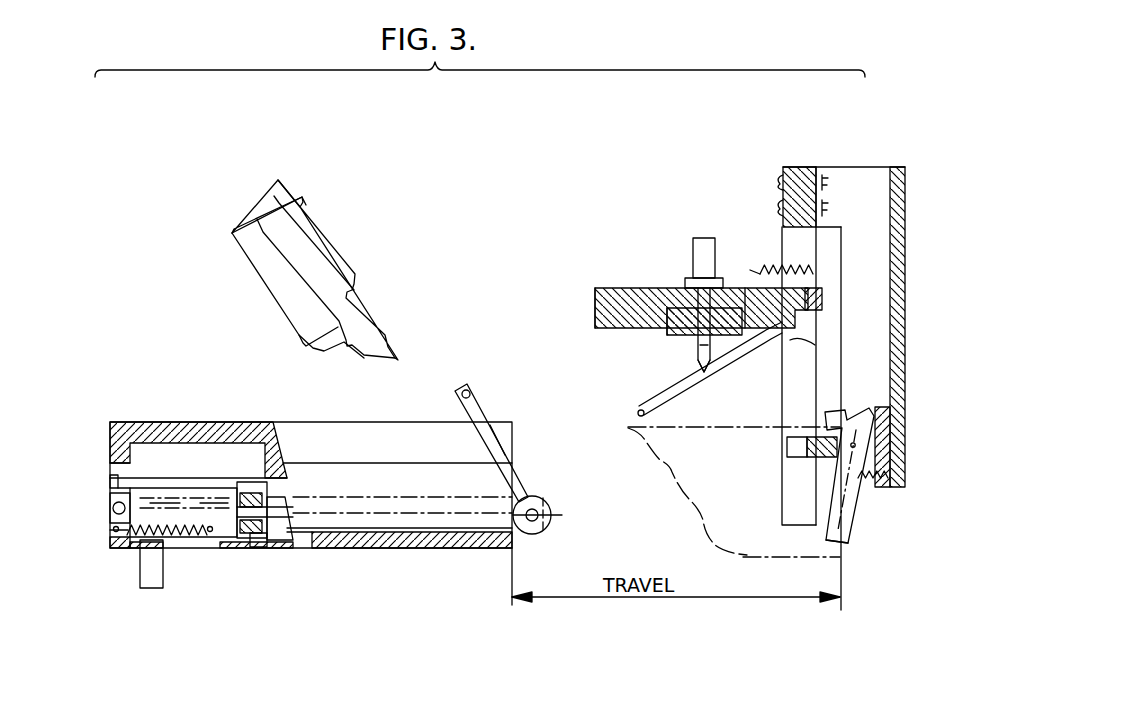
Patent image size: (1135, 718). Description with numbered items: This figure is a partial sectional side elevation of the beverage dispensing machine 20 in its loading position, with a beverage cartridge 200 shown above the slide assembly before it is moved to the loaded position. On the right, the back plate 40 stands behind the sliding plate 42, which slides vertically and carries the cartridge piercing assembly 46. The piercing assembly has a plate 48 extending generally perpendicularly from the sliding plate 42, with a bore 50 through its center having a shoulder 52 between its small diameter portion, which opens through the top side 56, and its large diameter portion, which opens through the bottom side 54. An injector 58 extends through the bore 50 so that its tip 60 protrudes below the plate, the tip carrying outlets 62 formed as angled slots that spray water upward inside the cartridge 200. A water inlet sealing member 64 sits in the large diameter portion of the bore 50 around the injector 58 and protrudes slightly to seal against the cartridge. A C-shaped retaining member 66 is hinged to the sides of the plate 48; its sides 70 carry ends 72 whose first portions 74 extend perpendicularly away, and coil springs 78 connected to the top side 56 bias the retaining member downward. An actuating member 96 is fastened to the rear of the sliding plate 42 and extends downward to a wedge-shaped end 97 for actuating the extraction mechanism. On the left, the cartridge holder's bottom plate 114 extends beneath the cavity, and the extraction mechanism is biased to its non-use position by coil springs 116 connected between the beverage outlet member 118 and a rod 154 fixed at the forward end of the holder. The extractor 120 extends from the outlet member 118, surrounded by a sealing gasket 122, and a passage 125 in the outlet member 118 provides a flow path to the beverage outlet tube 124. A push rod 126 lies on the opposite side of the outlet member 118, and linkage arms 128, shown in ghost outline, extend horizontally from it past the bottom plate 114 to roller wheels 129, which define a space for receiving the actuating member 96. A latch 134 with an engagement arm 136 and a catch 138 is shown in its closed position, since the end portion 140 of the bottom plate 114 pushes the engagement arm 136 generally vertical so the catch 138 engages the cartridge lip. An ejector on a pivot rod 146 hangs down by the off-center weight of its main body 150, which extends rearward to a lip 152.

The beverage cartridge 200 is at (322, 205).
The beverage dispensing machine 20 is at (540, 185).
The back plate 40 is at (896, 192).
The sliding plate 42 is at (788, 480).
The cartridge piercing assembly 46 is at (600, 300).
The plate 48 is at (600, 315).
The bore 50 is at (690, 290).
The shoulder 52 is at (670, 325).
The bottom side 54 is at (815, 345).
The top side 56 is at (765, 292).
The injector 58 is at (698, 240).
The tip 60 is at (715, 372).
The outlets 62 is at (690, 368).
The water inlet sealing member 64 is at (683, 335).
The retaining member 66 is at (660, 430).
The sides 70 is at (685, 392).
The ends 72 is at (815, 272).
The first portions 74 is at (822, 292).
The coil springs 78 is at (770, 258).
The actuating member 96 is at (862, 170).
The wedge-shaped end 97 is at (875, 470).
The bottom plate 114 is at (450, 550).
The coil springs 116 is at (128, 548).
The beverage outlet member 118 is at (232, 548).
The extractor 120 is at (290, 545).
The sealing gasket 122 is at (258, 548).
The beverage outlet tube 124 is at (160, 580).
The passage 125 is at (220, 505).
The push rod 126 is at (112, 502).
The linkage arms 128 is at (378, 520).
The roller wheels 129 is at (550, 520).
The latch 134 is at (877, 410).
The engagement arm 136 is at (845, 543).
The catch 138 is at (800, 417).
The end portion 140 is at (512, 548).
The pivot rod 146 is at (464, 385).
The main body 150 is at (495, 445).
The lip 152 is at (536, 497).
The rod 154 is at (110, 533).